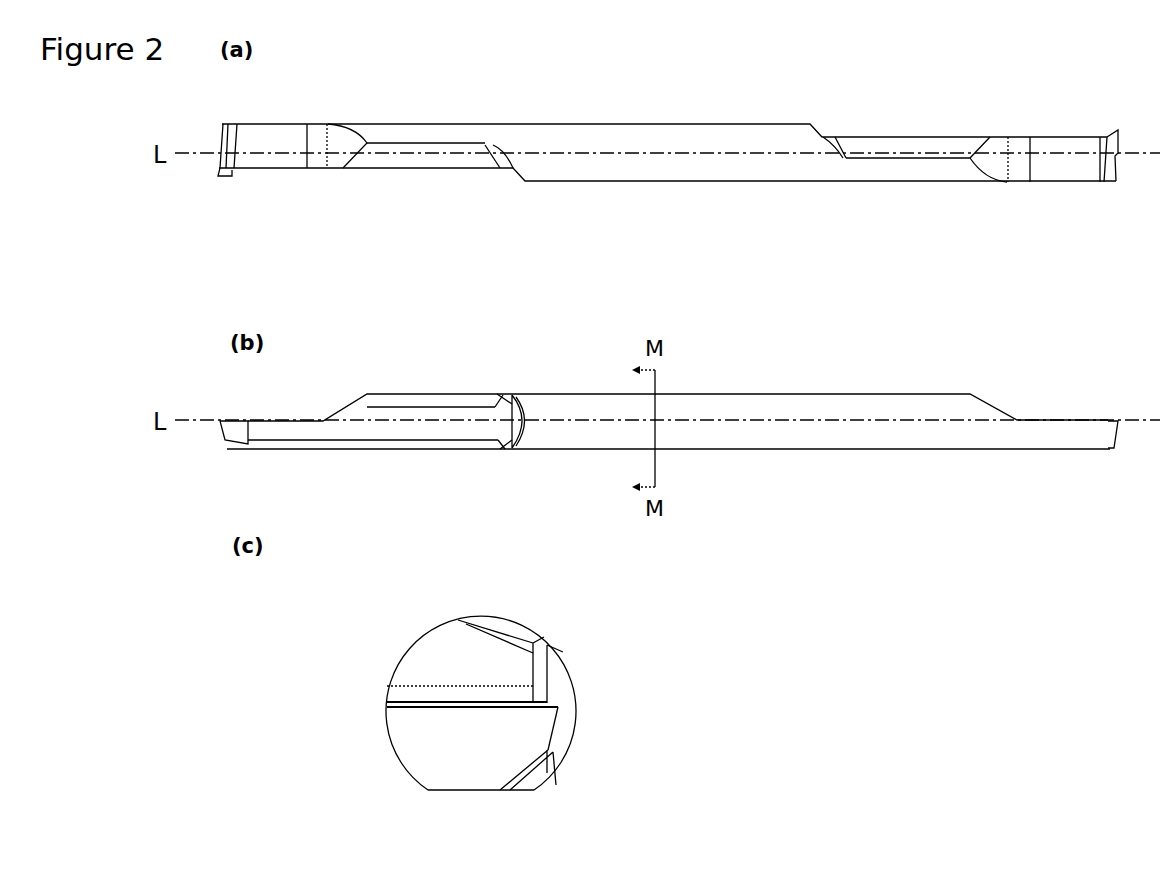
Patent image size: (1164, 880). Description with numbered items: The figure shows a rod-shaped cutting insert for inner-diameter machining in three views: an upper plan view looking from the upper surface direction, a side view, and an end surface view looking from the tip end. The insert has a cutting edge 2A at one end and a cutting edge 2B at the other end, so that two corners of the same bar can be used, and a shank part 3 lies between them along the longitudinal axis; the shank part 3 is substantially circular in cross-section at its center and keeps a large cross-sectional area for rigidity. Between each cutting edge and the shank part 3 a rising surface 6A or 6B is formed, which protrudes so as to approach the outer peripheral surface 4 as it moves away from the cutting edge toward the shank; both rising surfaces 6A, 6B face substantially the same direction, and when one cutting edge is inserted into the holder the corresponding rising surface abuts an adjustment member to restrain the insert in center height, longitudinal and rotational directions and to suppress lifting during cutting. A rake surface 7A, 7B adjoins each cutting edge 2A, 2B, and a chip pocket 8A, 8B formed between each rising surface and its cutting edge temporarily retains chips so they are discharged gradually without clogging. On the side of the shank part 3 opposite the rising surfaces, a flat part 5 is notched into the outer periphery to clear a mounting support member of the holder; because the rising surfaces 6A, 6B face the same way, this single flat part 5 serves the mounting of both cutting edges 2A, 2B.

The cutting edge 2A is at (220, 172).
The cutting edge 2B is at (1117, 130).
The shank part 3 is at (628, 135).
The outer peripheral surface 4 is at (446, 620).
The flat part 5 is at (476, 800).
The rising surface 6A is at (332, 145).
The rising surface 6B is at (1002, 155).
The rake surface 7A is at (231, 160).
The rake surface 7B is at (1110, 185).
The chip pocket 8A is at (285, 157).
The chip pocket 8B is at (1047, 172).